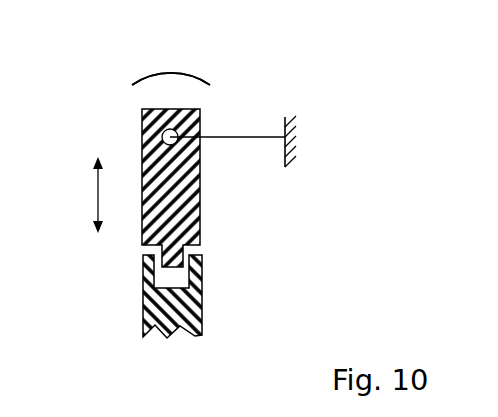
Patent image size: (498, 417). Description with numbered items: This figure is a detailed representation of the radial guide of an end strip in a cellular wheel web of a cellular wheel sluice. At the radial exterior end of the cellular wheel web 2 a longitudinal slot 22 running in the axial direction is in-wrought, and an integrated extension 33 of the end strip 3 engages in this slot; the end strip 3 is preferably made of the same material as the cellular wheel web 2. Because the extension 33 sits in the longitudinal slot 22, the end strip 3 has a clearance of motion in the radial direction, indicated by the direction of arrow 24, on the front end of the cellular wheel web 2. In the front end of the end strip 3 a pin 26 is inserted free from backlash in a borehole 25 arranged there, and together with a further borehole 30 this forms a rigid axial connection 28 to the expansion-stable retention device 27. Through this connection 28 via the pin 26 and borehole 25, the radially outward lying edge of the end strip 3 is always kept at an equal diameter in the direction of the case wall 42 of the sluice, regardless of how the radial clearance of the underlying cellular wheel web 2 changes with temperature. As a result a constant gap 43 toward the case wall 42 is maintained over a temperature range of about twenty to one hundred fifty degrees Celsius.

The cellular wheel web 2 is at (162, 302).
The end strip 3 is at (170, 190).
The longitudinal slot 22 is at (180, 282).
The extension 33 is at (182, 257).
The direction of arrow 24 is at (97, 190).
The borehole 25 is at (99, 112).
The pin 26 is at (156, 128).
The retention device 27 is at (292, 123).
The connection 28 is at (268, 73).
The borehole 30 is at (243, 135).
The case wall 42 is at (145, 77).
The gap 43 is at (183, 92).